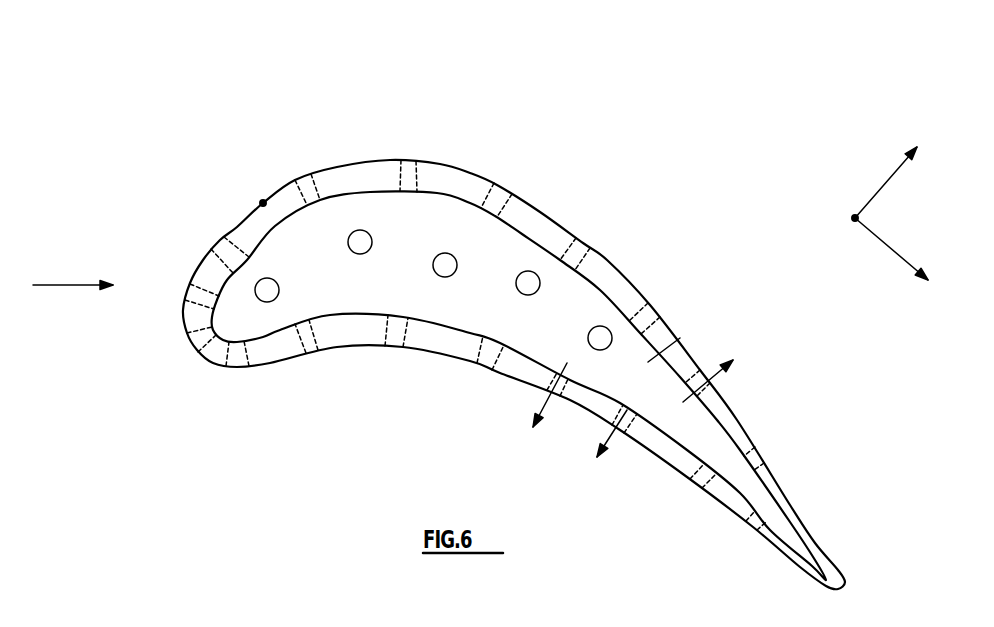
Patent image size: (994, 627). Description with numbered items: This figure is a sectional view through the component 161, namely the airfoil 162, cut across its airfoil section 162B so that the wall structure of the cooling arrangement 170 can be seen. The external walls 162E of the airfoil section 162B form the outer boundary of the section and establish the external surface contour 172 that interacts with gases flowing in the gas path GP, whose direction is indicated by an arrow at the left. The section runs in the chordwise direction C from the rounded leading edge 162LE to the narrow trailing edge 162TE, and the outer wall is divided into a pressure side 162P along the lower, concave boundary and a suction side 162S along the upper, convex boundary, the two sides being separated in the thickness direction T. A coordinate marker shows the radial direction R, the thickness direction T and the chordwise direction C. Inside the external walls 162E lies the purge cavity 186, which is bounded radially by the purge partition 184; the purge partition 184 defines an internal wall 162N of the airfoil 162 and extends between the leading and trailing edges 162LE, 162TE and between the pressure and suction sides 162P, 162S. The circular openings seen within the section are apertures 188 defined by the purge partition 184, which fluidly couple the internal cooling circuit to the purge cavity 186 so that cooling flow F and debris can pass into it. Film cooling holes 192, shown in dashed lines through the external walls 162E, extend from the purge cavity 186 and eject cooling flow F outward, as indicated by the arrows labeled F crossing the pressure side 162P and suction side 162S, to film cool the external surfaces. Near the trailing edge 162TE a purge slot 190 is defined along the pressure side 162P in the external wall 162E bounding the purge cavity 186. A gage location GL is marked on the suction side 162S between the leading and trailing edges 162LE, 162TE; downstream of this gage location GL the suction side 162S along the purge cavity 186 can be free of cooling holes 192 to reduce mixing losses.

The vane 161 is at (437, 305).
The airfoil 162 is at (162, 80).
The airfoil section 162B is at (267, 153).
The gage location GL is at (263, 203).
The external walls 162E is at (457, 180).
The cooling arrangement 170 is at (628, 188).
The suction side 162S is at (625, 280).
The pressure side 162P is at (513, 380).
The purge cavity 186 is at (677, 340).
The cooling flow F is at (637, 407).
The film cooling holes 192 is at (747, 453).
The apertures 188 is at (435, 272).
The leading edge 162LE is at (210, 363).
The external surface contour 172 is at (270, 367).
The internal wall 162N is at (687, 430).
The purge partition 184 is at (627, 485).
The purge slot 190 is at (748, 513).
The trailing edge 162TE is at (846, 572).
The gas path GP is at (62, 284).
The radial direction R is at (853, 220).
The thickness direction T is at (893, 173).
The chordwise direction C is at (902, 262).